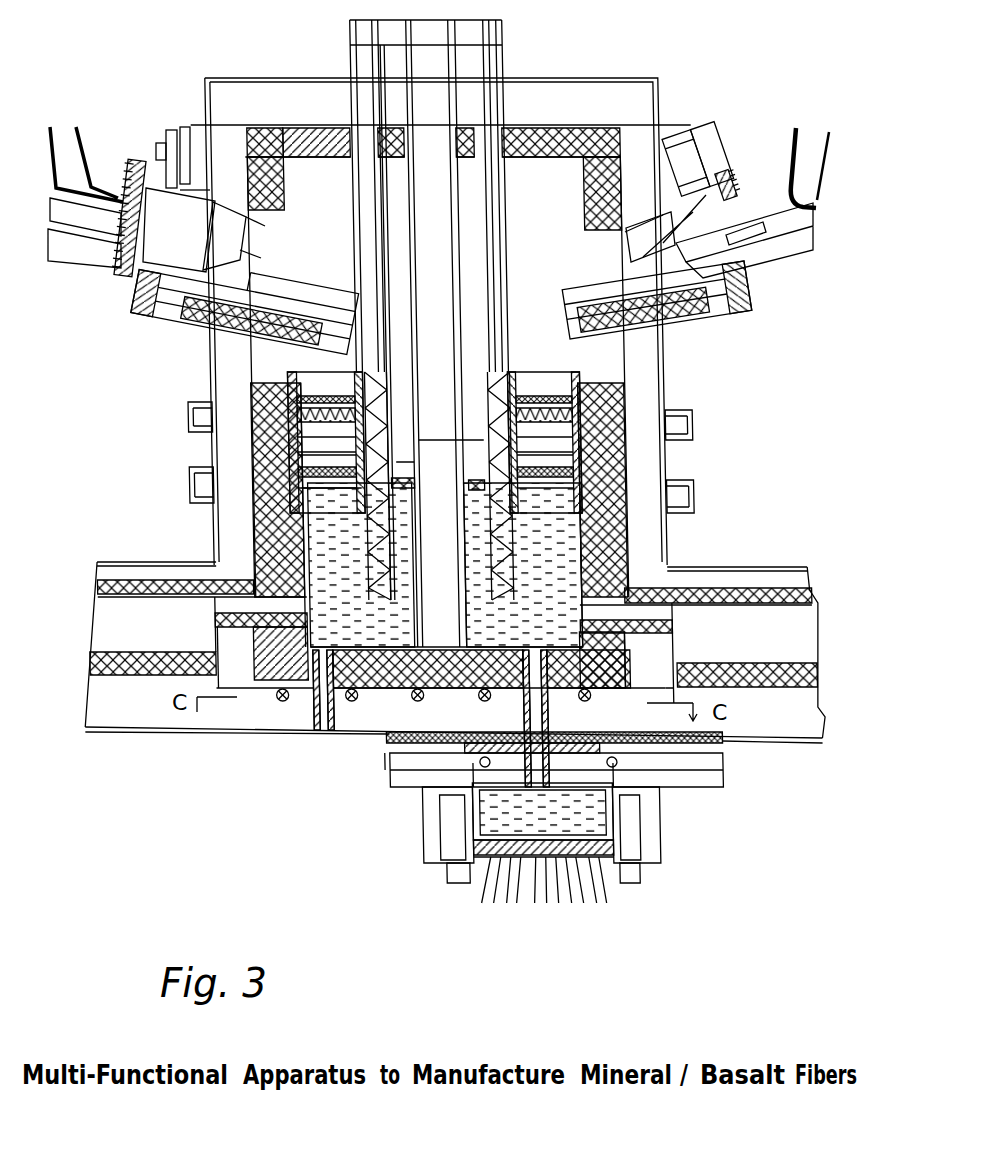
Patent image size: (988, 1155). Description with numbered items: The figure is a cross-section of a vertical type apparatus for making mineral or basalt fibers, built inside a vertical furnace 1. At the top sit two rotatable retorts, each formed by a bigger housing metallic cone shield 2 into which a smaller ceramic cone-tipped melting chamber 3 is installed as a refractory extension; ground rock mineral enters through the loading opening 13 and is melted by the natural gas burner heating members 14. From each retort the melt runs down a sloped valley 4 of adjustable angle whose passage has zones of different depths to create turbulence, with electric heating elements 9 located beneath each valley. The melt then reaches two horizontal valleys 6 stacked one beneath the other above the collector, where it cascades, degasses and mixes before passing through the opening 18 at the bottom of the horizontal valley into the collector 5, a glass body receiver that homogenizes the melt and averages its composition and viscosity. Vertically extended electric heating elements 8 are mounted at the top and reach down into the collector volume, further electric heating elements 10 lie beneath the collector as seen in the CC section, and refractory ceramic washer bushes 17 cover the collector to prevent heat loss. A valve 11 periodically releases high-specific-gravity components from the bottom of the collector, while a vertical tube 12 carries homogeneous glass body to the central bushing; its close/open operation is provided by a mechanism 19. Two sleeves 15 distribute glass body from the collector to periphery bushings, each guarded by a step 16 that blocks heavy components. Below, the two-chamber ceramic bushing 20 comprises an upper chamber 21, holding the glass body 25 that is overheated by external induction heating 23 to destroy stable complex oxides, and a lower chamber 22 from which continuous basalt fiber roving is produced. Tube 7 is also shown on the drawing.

The vertical furnace 1 is at (600, 78).
The retort housing metallic cone shield 2 is at (700, 188).
The ceramic cone-tipped melting chamber 3 is at (643, 235).
The sloped valley 4 is at (710, 320).
The collector 5 is at (445, 565).
The horizontal valleys 6 is at (705, 387).
The central tube 7 is at (431, 80).
The vertically extended electric heating elements 8 is at (560, 58).
The electric heating element 9 is at (692, 420).
The electric heating elements 10 is at (362, 706).
The valve 11 is at (320, 735).
The vertical tube 12 is at (550, 722).
The ground rock mineral loading opening 13 is at (826, 217).
The natural gas burner heating member 14 is at (822, 127).
The sleeves 15 is at (850, 540).
The step 16 is at (700, 626).
The washer bushes 17 is at (405, 463).
The opening 18 is at (332, 504).
The valve open/close mechanism 19 is at (700, 741).
The two-chamber ceramic bushing 20 is at (640, 832).
The upper chamber 21 is at (645, 808).
The lower chamber 22 is at (600, 850).
The external induction heating 23 is at (463, 818).
The glass body inside upper chamber 25 is at (548, 820).